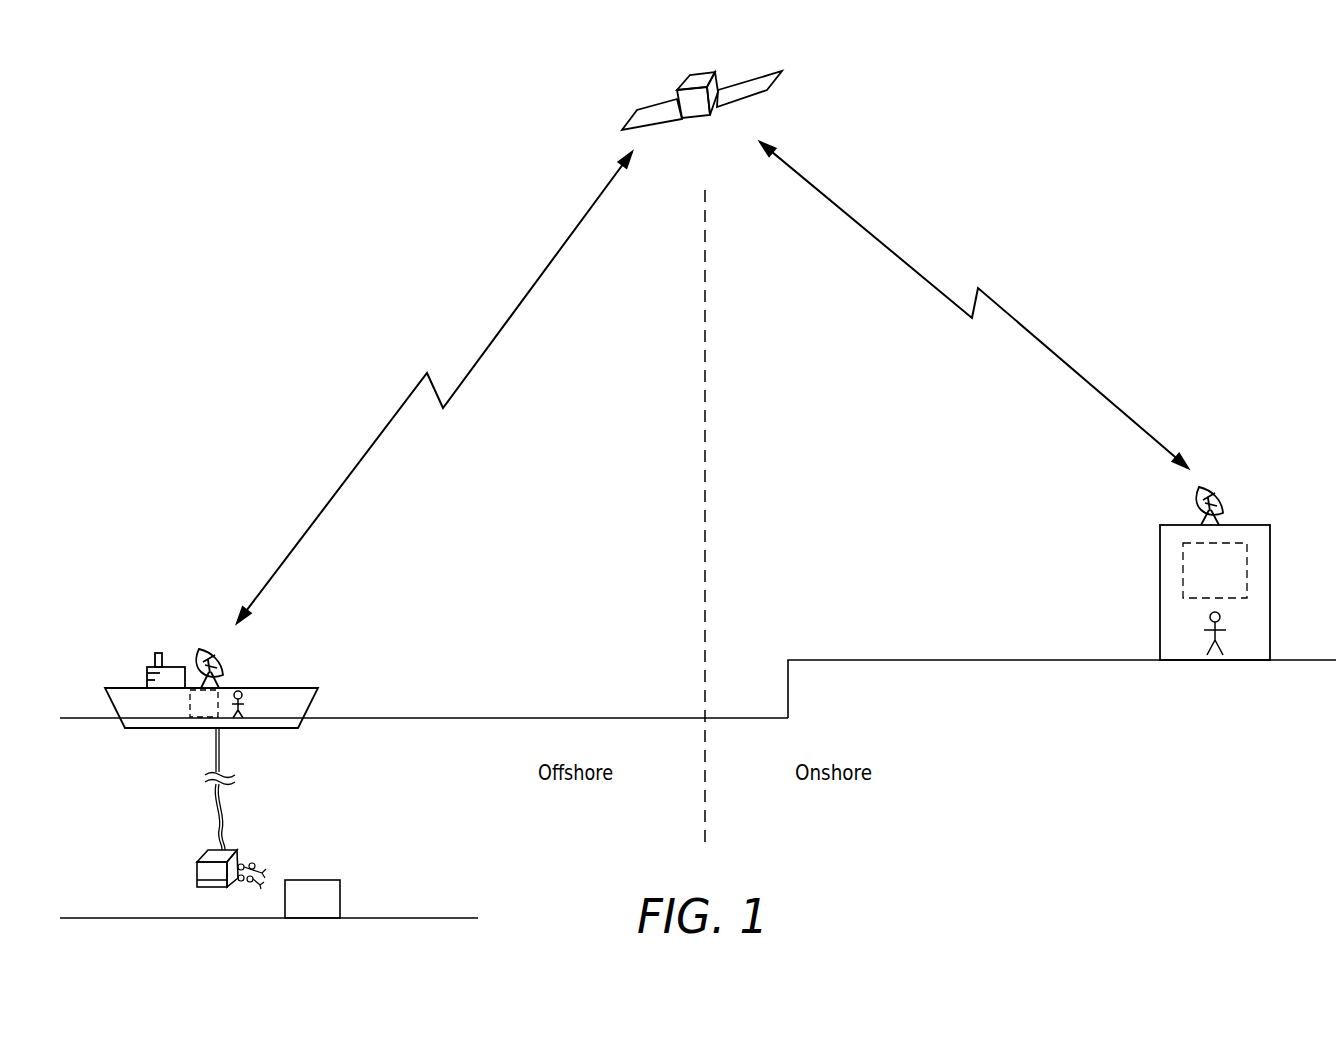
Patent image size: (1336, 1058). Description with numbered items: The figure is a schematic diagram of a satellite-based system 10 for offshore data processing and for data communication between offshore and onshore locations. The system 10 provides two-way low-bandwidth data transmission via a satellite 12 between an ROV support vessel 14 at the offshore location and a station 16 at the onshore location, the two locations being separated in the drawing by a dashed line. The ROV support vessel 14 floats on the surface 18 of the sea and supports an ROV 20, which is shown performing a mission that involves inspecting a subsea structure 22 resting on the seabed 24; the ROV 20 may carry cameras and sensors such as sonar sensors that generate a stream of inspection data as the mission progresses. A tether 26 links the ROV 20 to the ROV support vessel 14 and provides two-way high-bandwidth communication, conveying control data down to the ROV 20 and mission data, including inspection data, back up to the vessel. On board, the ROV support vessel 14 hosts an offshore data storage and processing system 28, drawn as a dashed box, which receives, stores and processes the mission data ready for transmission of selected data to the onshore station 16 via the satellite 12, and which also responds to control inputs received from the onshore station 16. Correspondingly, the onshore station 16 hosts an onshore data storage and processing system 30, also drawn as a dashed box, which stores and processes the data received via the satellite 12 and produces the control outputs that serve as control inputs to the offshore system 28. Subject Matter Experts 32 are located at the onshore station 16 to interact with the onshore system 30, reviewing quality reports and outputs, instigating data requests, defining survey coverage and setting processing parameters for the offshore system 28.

The satellite-based system 10 is at (420, 176).
The satellite 12 is at (696, 73).
The ROV support vessel 14 is at (298, 687).
The station 16 is at (1160, 543).
The surface 18 is at (527, 717).
The ROV 20 is at (195, 863).
The subsea structure 22 is at (313, 880).
The seabed 24 is at (432, 917).
The tether 26 is at (213, 800).
The offshore data storage and processing system 28 is at (194, 720).
The onshore data storage and processing system 30 is at (1248, 552).
The Subject Matter Experts 32 is at (240, 690).